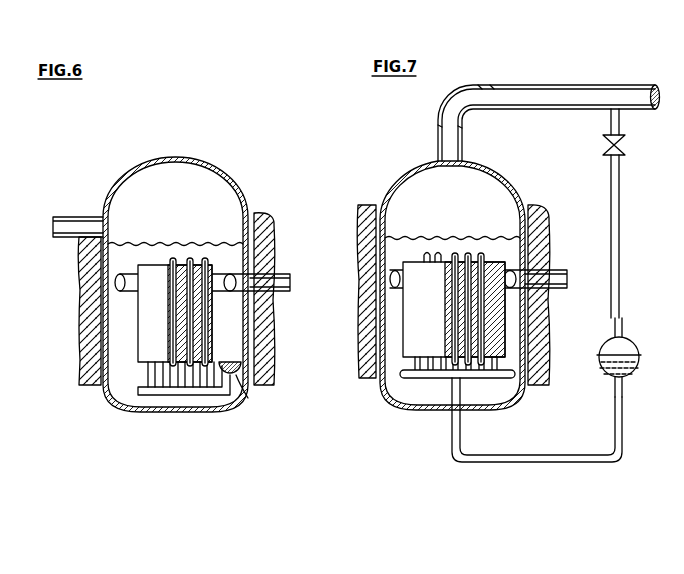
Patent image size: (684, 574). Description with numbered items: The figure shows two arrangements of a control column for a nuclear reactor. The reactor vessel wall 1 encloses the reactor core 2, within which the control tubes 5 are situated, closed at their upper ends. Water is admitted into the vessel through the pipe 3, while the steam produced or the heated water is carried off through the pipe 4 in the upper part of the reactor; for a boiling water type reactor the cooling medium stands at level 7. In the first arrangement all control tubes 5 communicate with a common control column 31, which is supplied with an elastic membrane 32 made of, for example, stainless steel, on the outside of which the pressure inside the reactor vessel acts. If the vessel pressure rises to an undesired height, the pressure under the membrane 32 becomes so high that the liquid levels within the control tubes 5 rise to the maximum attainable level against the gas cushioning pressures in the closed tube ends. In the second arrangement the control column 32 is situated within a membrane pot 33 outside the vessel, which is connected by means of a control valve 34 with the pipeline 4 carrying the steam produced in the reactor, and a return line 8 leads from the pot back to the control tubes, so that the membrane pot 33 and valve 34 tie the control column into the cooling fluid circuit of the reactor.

In FIG. 6, the reactor vessel wall 1 is at (208, 172).
In FIG. 7, the reactor vessel wall 1 is at (436, 160).
In FIG. 6, the reactor core 2 is at (146, 343).
In FIG. 7, the reactor core 2 is at (416, 270).
In FIG. 6, the water admission pipe 3 is at (279, 273).
In FIG. 6, the steam pipe 4 is at (73, 216).
In FIG. 7, the steam pipe 4 is at (584, 87).
In FIG. 6, the control tubes 5 is at (157, 258).
In FIG. 7, the control tubes 5 is at (446, 250).
In FIG. 6, the cooling medium level 7 is at (119, 240).
In FIG. 7, the return pipe 8 is at (602, 462).
In FIG. 6, the control column 31 is at (254, 395).
In FIG. 6, the elastic membrane 32 is at (233, 353).
In FIG. 7, the elastic membrane 32 is at (621, 351).
In FIG. 7, the membrane pot 33 is at (624, 373).
In FIG. 7, the control valve 34 is at (626, 145).